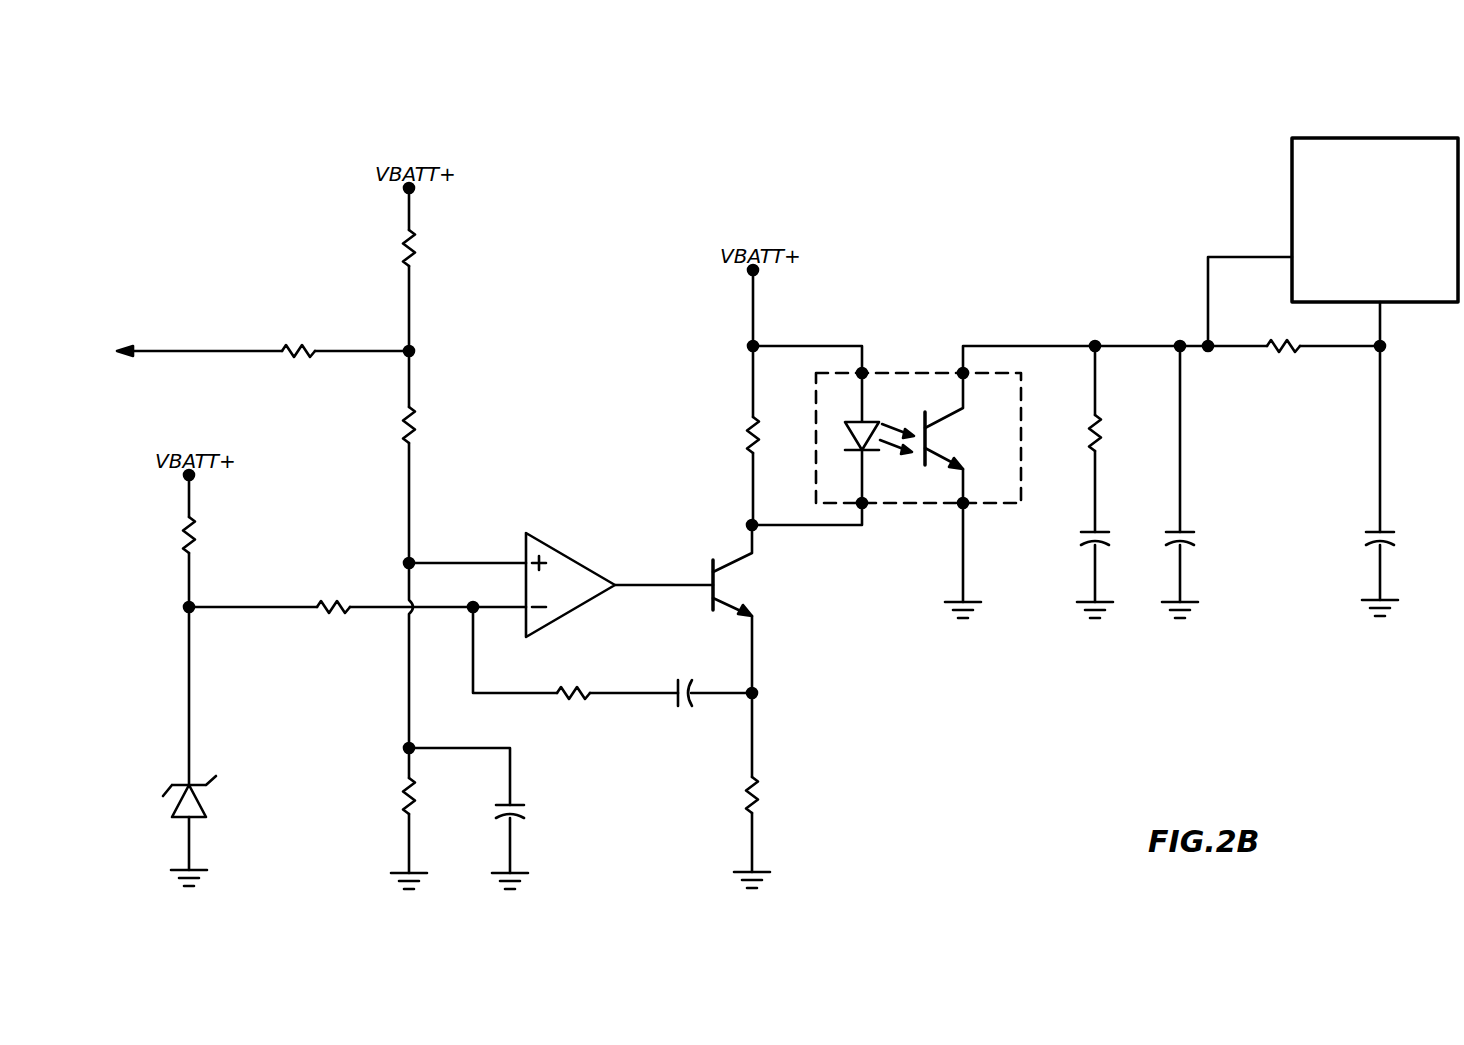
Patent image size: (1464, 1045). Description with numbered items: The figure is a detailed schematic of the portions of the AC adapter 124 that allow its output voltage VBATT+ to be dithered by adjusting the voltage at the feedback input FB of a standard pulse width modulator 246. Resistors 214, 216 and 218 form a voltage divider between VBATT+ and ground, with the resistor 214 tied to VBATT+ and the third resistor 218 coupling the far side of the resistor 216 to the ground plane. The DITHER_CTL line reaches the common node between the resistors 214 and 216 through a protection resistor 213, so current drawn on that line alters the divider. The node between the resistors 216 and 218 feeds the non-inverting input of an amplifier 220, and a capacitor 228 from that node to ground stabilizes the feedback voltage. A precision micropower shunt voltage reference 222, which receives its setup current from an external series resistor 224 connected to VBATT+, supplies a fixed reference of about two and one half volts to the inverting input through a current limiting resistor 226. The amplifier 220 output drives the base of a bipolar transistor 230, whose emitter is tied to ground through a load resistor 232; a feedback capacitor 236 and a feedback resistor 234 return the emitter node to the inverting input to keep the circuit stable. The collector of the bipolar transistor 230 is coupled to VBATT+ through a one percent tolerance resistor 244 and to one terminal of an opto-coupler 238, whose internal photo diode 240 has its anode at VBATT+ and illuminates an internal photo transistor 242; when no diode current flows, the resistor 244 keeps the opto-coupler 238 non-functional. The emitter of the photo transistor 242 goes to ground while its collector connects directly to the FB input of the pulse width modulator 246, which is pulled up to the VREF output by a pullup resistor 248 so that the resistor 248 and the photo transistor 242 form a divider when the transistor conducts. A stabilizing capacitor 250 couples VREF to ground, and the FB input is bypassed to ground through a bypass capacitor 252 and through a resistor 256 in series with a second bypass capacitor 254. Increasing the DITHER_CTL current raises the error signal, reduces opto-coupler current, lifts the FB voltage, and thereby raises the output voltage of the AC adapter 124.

The AC adapter 124 is at (748, 173).
The protection resistor 213 is at (306, 350).
The resistor 214 is at (414, 247).
The resistor 216 is at (414, 428).
The third resistor 218 is at (400, 800).
The amplifier 220 is at (565, 556).
The precision micropower shunt voltage reference 222 is at (205, 805).
The external series resistor 224 is at (196, 540).
The current limiting resistor 226 is at (330, 600).
The capacitor 228 is at (528, 822).
The bipolar transistor 230 is at (736, 563).
The load resistor 232 is at (745, 800).
The feedback resistor 234 is at (575, 705).
The feedback capacitor 236 is at (676, 685).
The opto-coupler 238 is at (911, 372).
The photo diode 240 is at (878, 444).
The photo transistor 242 is at (950, 470).
The resistor 244 is at (745, 432).
The pulse width modulator 246 is at (1292, 192).
The pullup resistor 248 is at (1275, 352).
The stabilizing capacitor 250 is at (1388, 535).
The bypass capacitor 252 is at (1196, 540).
The second bypass capacitor 254 is at (1085, 545).
The resistor 256 is at (1105, 437).